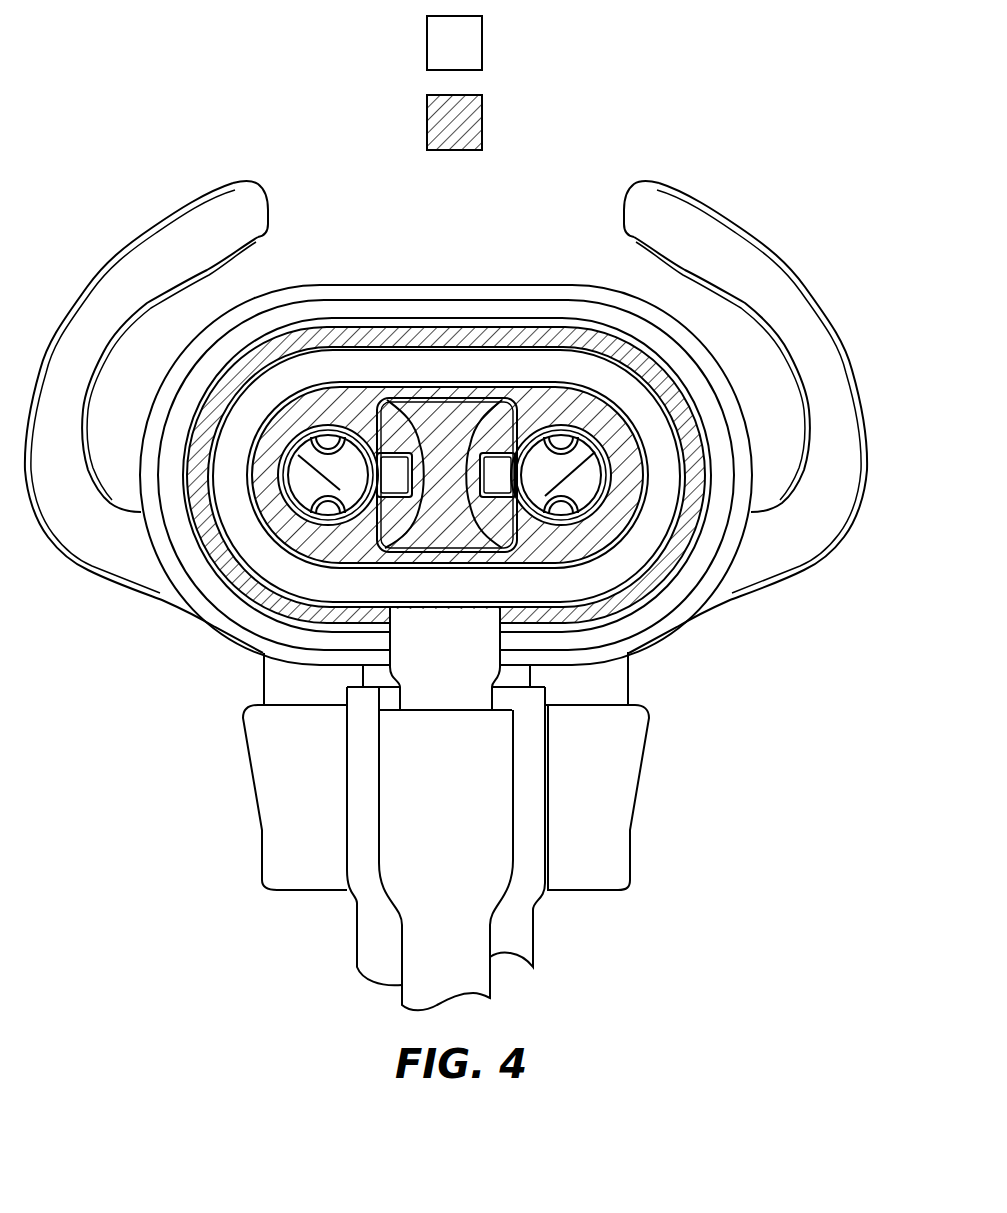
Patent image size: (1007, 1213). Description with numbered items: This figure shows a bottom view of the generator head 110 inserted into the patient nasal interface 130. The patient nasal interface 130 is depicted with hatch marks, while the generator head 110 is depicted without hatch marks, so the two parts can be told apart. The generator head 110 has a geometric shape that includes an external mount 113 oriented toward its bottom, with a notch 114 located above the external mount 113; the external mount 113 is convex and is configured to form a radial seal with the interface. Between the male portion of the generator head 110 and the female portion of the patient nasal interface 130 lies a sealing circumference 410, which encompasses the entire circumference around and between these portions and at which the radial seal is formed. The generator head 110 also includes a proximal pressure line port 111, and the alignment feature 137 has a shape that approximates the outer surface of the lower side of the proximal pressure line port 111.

The generator head 110 is at (482, 33).
The patient nasal interface 130 is at (482, 113).
The sealing circumference 410 is at (478, 354).
The external mount 113 is at (668, 380).
The notch 114 is at (632, 376).
The proximal pressure line port 111 is at (473, 643).
The alignment feature 137 is at (503, 621).